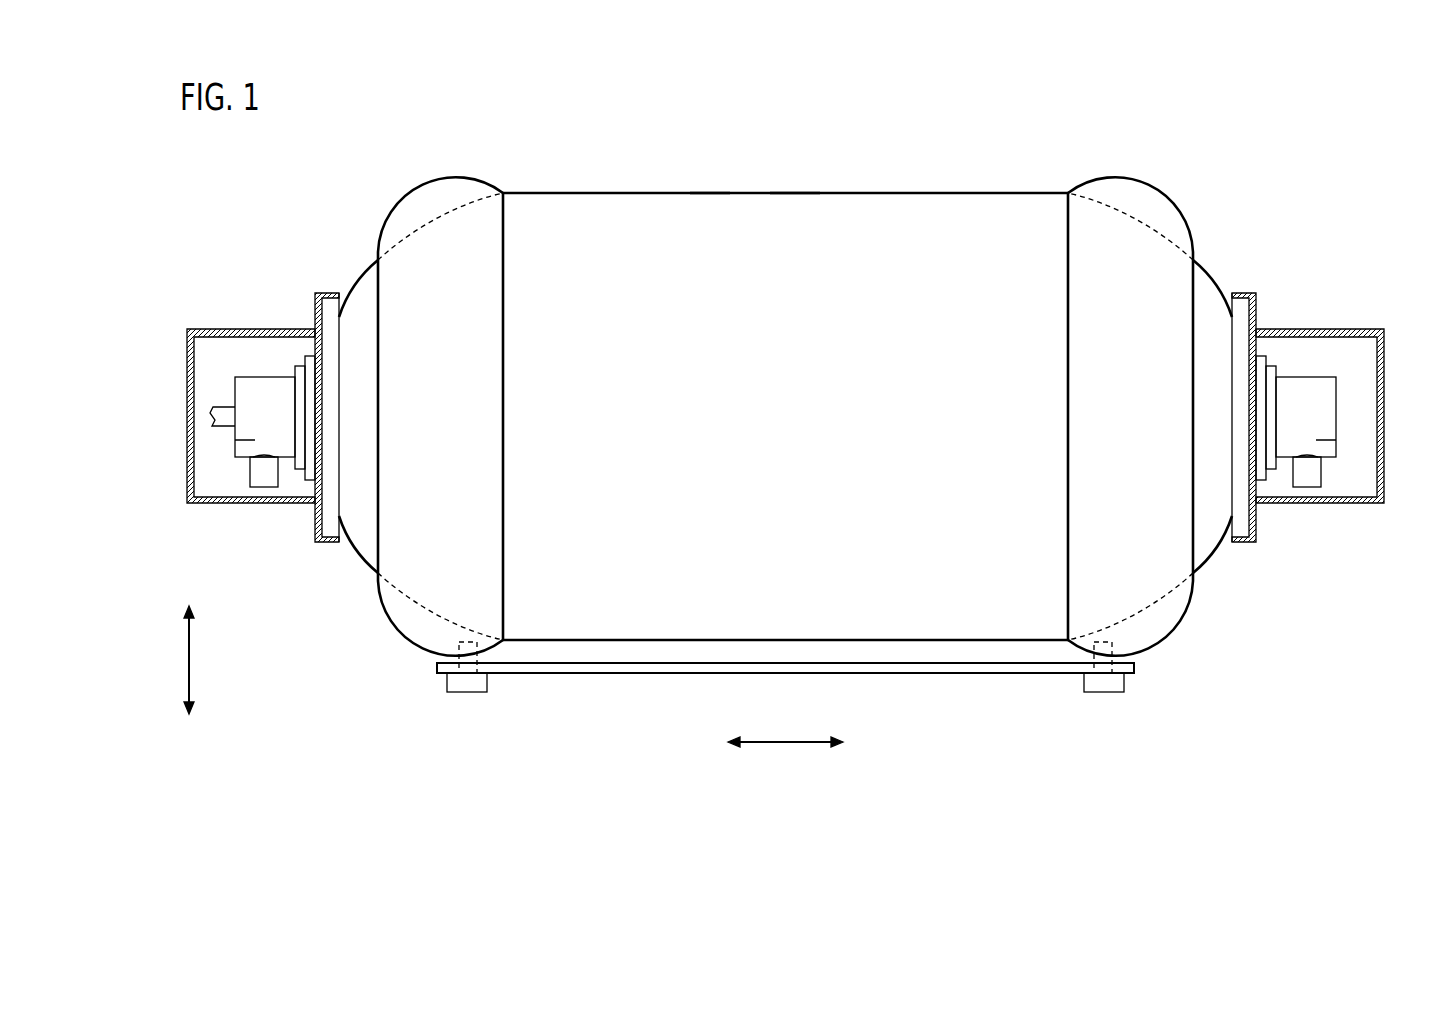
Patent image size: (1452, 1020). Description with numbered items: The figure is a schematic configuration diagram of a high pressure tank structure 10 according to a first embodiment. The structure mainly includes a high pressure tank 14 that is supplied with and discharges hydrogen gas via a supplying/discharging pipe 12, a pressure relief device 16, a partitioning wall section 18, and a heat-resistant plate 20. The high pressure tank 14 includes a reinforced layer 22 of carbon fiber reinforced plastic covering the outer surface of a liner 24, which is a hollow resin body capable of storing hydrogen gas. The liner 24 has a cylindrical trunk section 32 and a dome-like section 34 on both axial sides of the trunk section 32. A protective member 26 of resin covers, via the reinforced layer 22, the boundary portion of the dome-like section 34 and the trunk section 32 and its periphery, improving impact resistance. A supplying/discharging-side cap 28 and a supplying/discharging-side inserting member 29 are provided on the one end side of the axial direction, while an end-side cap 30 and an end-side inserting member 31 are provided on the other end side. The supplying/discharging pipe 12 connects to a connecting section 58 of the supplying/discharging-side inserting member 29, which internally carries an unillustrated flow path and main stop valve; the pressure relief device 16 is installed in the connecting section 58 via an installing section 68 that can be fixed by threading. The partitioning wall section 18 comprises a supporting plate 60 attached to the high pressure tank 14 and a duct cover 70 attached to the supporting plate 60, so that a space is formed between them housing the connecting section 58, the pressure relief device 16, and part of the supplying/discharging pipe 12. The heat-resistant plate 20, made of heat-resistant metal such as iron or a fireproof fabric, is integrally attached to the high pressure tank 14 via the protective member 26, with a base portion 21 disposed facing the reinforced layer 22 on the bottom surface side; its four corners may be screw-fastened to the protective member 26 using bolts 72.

The high pressure tank structure 10 is at (1287, 129).
The supplying/discharging pipe 12 is at (220, 414).
The high pressure tank 14 is at (941, 173).
The pressure relief device 16 is at (265, 463).
The partitioning wall section 18 is at (347, 247).
The heat-resistant plate 20 is at (930, 665).
The base portion 21 is at (610, 670).
The reinforced layer 22 is at (640, 192).
The liner 24 is at (703, 218).
The protective member 26 is at (465, 182).
The supplying/discharging-side cap 28 is at (313, 457).
The supplying/discharging-side inserting member 29 is at (260, 372).
The end-side cap 30 is at (1257, 457).
The end-side inserting member 31 is at (1309, 372).
The trunk section 32 is at (797, 200).
The dome-like section 34 is at (422, 250).
The connecting section 58 is at (245, 440).
The supporting plate 60 is at (328, 313).
The installing section 68 is at (250, 470).
The duct cover 70 is at (278, 333).
The bolt 72 is at (470, 687).